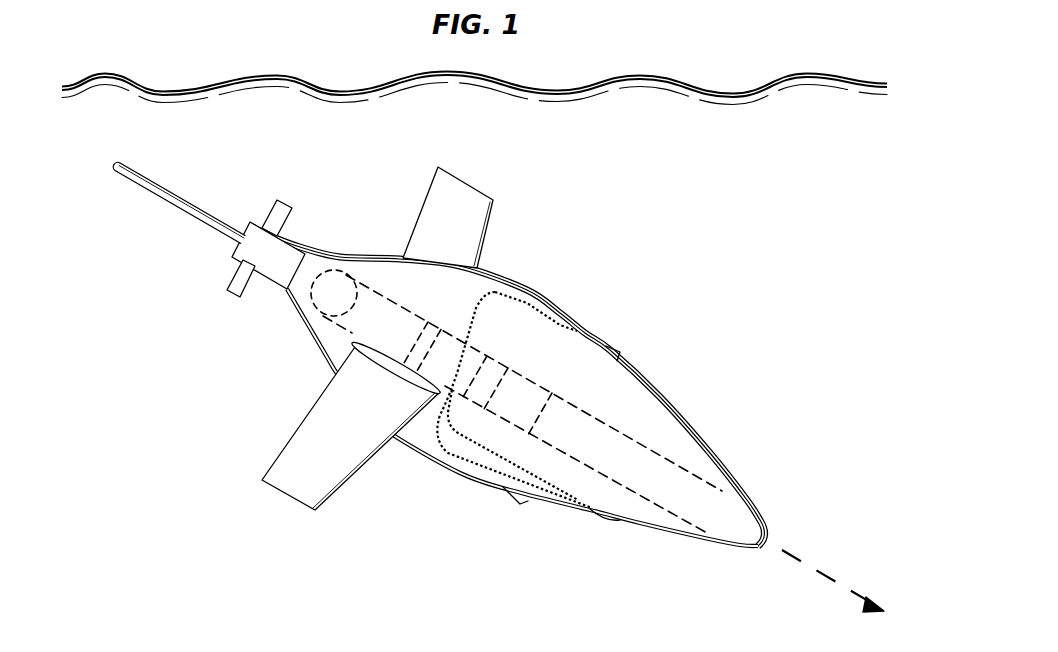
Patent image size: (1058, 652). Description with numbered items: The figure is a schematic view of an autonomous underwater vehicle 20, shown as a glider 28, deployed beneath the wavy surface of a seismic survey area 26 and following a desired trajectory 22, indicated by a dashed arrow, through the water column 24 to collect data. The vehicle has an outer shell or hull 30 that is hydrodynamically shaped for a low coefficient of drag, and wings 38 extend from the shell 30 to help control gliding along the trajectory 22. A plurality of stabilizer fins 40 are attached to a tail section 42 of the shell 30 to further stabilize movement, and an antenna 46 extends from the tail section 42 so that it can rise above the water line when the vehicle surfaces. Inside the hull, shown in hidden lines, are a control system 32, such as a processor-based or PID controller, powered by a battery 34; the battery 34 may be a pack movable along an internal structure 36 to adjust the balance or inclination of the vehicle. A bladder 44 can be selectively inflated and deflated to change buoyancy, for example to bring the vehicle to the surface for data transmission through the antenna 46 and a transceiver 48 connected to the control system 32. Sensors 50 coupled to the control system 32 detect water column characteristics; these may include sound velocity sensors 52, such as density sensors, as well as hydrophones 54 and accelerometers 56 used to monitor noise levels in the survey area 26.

The autonomous underwater vehicle 20 is at (559, 271).
The desired trajectory 22 is at (833, 582).
The water column 24 is at (801, 255).
The seismic survey area 26 is at (729, 71).
The glider 28 is at (685, 414).
The outer shell or hull 30 is at (714, 463).
The control system 32 is at (473, 348).
The battery 34 is at (518, 380).
The internal structure 36 is at (655, 510).
The wings 38 is at (495, 208).
The stabilizer fins 40 is at (238, 277).
The tail section 42 is at (268, 273).
The bladder 44 is at (311, 274).
The antenna 46 is at (157, 197).
The transceiver 48 is at (440, 326).
The sensors 50 is at (608, 326).
The sound velocity sensors 52 is at (621, 352).
The hydrophones 54 is at (504, 497).
The accelerometers 56 is at (604, 524).